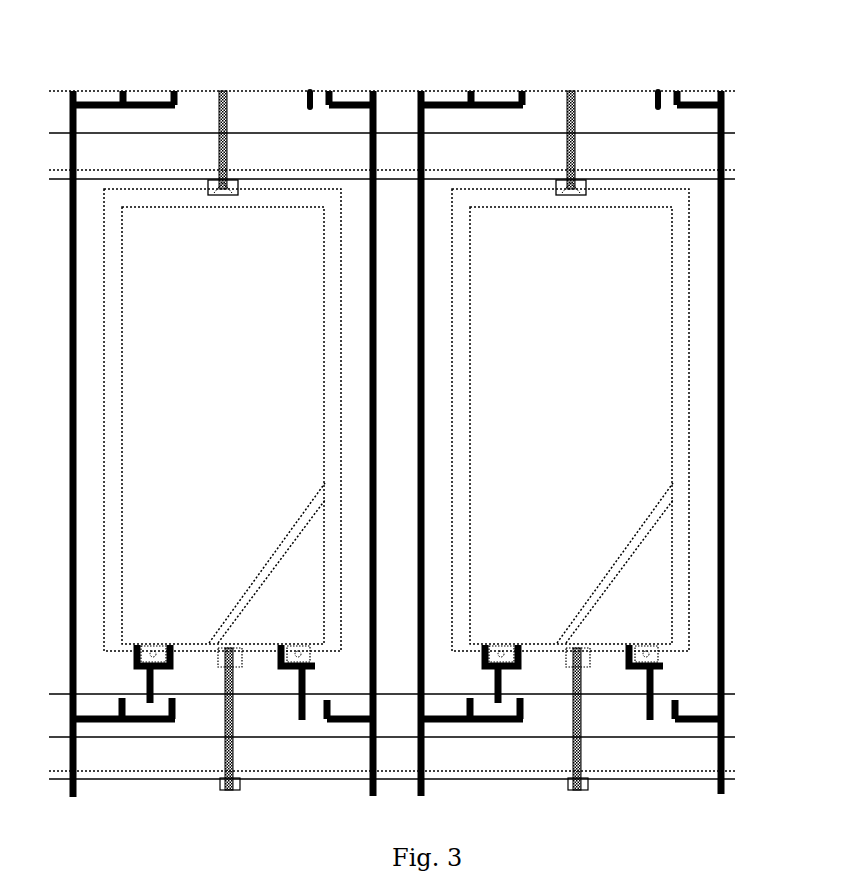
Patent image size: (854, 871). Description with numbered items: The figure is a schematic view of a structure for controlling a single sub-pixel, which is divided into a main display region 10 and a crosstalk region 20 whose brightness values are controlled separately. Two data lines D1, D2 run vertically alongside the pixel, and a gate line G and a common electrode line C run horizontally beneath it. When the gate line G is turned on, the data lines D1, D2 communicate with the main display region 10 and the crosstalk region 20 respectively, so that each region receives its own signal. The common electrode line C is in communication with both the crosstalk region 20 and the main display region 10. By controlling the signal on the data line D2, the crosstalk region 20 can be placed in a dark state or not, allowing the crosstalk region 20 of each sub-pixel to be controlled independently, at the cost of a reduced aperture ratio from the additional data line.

The data line D1 is at (423, 148).
The data line D2 is at (723, 393).
The main display region 10 is at (620, 333).
The crosstalk region 20 is at (653, 590).
The gate line G is at (620, 720).
The common electrode line C is at (662, 773).